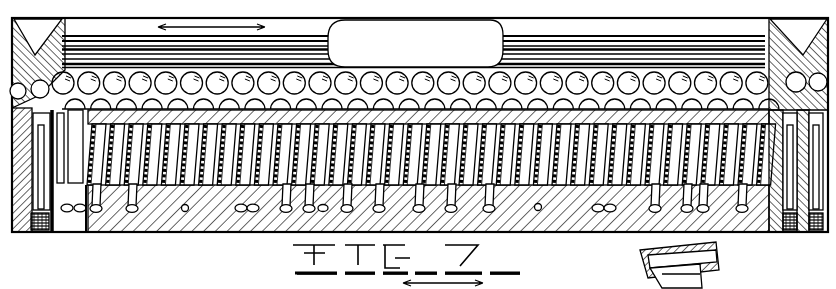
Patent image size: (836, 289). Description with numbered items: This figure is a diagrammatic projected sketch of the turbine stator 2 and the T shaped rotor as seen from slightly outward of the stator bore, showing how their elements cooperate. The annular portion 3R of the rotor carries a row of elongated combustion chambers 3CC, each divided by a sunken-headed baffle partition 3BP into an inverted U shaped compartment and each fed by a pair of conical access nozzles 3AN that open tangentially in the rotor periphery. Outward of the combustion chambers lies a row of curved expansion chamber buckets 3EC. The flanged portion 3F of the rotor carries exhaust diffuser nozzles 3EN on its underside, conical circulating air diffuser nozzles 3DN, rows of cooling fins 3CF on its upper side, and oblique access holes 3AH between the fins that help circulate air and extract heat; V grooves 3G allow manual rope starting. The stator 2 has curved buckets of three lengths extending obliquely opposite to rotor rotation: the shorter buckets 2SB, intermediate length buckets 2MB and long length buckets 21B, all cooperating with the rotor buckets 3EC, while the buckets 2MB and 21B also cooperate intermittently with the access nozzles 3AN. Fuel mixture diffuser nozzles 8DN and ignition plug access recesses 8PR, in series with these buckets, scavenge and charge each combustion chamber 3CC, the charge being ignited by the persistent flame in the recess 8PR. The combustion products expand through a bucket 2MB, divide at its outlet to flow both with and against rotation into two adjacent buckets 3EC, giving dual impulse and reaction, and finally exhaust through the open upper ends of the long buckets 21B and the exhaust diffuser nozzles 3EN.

The combustion chambers 3CC is at (22, 195).
The expansion chamber buckets 3EC is at (77, 213).
The annular shaped portion 3R is at (88, 228).
The access nozzles 3AN is at (67, 212).
The intermediate length buckets 2MB is at (132, 212).
The diffuser nozzles 8DN is at (245, 217).
The access recess 8PR is at (185, 212).
The long length buckets 21B is at (284, 212).
The turbine stator 2 is at (493, 230).
The shorter buckets 2SB is at (576, 183).
The baffle partition 3BP is at (816, 223).
The access holes 3AH is at (794, 53).
The cooling fins 3CF is at (330, 25).
The circulating air diffuser nozzles 3DN is at (400, 72).
The flanged portion 3F is at (507, 70).
The V grooves 3G is at (326, 46).
The exhaust diffuser nozzles 3EN is at (437, 100).